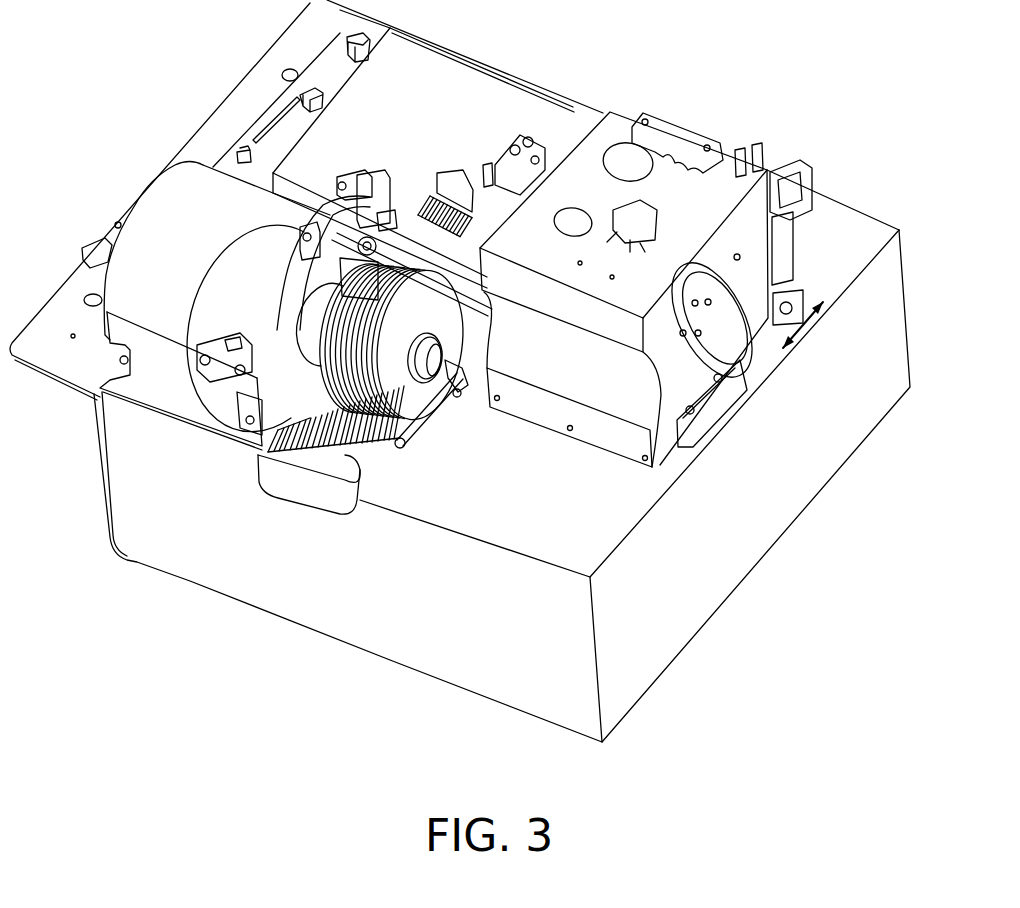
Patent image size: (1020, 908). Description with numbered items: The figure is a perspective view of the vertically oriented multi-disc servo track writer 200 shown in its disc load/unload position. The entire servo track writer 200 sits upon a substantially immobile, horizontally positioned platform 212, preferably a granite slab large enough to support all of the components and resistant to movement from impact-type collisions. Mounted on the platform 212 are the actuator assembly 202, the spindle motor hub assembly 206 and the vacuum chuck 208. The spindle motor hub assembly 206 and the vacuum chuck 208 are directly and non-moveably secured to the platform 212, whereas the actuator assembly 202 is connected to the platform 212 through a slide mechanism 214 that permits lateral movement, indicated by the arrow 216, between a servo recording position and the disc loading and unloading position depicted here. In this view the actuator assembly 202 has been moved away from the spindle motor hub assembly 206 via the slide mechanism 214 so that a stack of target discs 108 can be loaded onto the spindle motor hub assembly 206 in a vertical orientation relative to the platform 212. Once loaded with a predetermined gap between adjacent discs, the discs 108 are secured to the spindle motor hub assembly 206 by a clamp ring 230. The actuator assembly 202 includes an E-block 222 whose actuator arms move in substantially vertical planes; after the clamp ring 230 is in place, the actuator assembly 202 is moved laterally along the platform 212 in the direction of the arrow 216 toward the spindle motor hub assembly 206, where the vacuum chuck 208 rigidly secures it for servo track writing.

The multi-disc servo track writer 200 is at (718, 93).
The actuator assembly 202 is at (630, 463).
The spindle motor hub assembly 206 is at (155, 197).
The vacuum chuck 208 is at (395, 97).
The platform 212 is at (322, 600).
The slide mechanism 214 is at (793, 218).
The arrow 216 is at (818, 327).
The E-block 222 is at (463, 207).
The target disc 108 is at (402, 343).
The clamp ring 230 is at (437, 367).